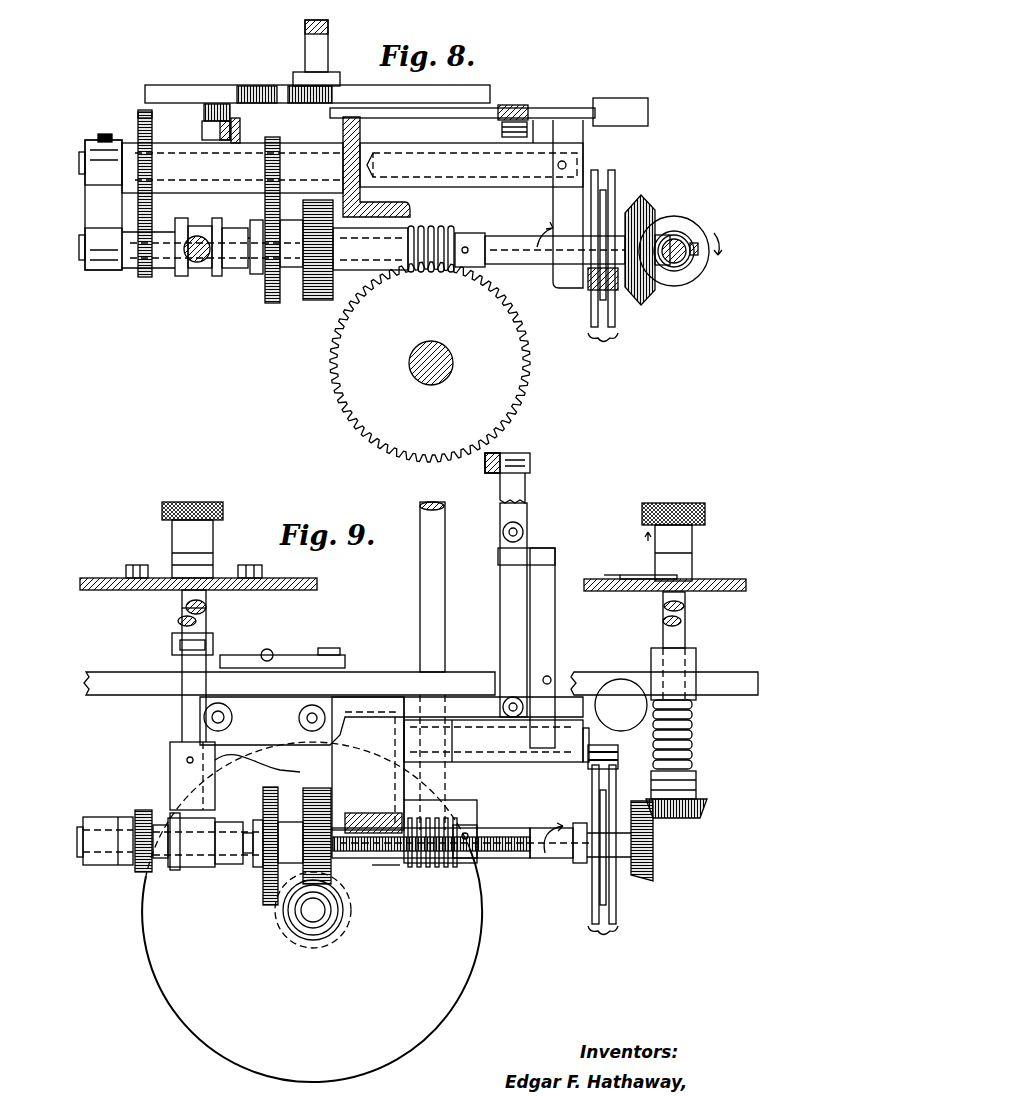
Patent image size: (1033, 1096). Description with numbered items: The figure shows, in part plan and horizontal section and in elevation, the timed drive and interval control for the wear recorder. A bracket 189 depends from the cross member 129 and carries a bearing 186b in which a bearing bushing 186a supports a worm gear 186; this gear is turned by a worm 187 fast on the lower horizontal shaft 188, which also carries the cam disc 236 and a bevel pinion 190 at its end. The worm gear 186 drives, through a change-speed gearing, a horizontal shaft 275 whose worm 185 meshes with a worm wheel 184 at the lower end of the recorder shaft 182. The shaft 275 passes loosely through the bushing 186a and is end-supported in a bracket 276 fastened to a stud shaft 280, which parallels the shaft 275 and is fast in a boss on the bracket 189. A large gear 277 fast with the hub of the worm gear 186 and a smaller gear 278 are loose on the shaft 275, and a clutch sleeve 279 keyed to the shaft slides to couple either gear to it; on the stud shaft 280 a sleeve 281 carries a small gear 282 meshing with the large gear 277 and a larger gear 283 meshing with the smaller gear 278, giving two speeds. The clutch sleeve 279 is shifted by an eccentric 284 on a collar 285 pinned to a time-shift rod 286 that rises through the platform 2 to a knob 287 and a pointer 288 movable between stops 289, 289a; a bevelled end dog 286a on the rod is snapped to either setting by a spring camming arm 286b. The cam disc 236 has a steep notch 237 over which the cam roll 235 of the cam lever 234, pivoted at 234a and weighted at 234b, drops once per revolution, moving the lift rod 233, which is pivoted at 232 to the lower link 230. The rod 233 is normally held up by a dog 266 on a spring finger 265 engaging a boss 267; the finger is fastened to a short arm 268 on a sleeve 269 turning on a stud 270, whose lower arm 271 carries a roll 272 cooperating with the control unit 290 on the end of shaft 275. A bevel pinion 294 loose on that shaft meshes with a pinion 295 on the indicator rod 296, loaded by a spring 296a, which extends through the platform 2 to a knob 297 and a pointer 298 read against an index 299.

In FIG. 9, the platform 2 is at (83, 583).
In FIG. 9, the cross member 129 is at (110, 677).
In FIG. 8, the recorder shaft 182 is at (454, 363).
In FIG. 9, the recorder shaft 182 is at (427, 572).
In FIG. 8, the worm wheel 184 is at (527, 397).
In FIG. 9, the worm wheel 184 is at (533, 853).
In FIG. 8, the worm 185 is at (431, 228).
In FIG. 9, the worm 185 is at (438, 865).
In FIG. 8, the worm gear 186 is at (318, 298).
In FIG. 9, the worm gear 186 is at (327, 790).
In FIG. 9, the bearing bushing 186a is at (363, 812).
In FIG. 8, the bearing 186b is at (355, 272).
In FIG. 9, the bearing 186b is at (372, 865).
In FIG. 8, the worm 187 is at (297, 262).
In FIG. 9, the worm 187 is at (325, 920).
In FIG. 8, the lower horizontal shaft 188 is at (325, 47).
In FIG. 9, the lower horizontal shaft 188 is at (305, 915).
In FIG. 8, the bracket 189 is at (362, 133).
In FIG. 9, the bracket 189 is at (345, 747).
In FIG. 9, the bevel pinion 190 is at (307, 932).
In FIG. 9, the lower link 230 is at (490, 471).
In FIG. 9, the pivot 232 is at (530, 463).
In FIG. 9, the lift rod 233 is at (528, 483).
In FIG. 8, the cam lever 234 is at (550, 110).
In FIG. 9, the cam lever 234 is at (275, 706).
In FIG. 8, the fixed pivot 234a is at (203, 115).
In FIG. 9, the fixed pivot 234a is at (204, 717).
In FIG. 8, the weight 234b is at (625, 100).
In FIG. 9, the weight 234b is at (614, 703).
In FIG. 8, the cam roll 235 is at (307, 90).
In FIG. 9, the cam roll 235 is at (299, 718).
In FIG. 8, the cam disc 236 is at (170, 90).
In FIG. 9, the cam disc 236 is at (205, 1028).
In FIG. 8, the notch 237 is at (262, 90).
In FIG. 9, the notch 237 is at (280, 767).
In FIG. 9, the finger 265 is at (552, 610).
In FIG. 9, the dog 266 is at (525, 553).
In FIG. 9, the boss 267 is at (521, 529).
In FIG. 9, the short arm 268 is at (548, 680).
In FIG. 9, the sleeve 269 is at (507, 762).
In FIG. 9, the stud 270 is at (478, 745).
In FIG. 9, the lower arm 271 is at (577, 763).
In FIG. 8, the roll 272 is at (597, 283).
In FIG. 9, the roll 272 is at (590, 768).
In FIG. 8, the horizontal shaft 275 is at (517, 243).
In FIG. 9, the horizontal shaft 275 is at (565, 863).
In FIG. 8, the bracket 276 is at (92, 207).
In FIG. 9, the bracket 276 is at (92, 862).
In FIG. 8, the large gear 277 is at (268, 297).
In FIG. 9, the large gear 277 is at (273, 895).
In FIG. 8, the smaller gear 278 is at (147, 277).
In FIG. 9, the smaller gear 278 is at (143, 875).
In FIG. 8, the clutch sleeve 279 is at (203, 270).
In FIG. 9, the clutch sleeve 279 is at (195, 866).
In FIG. 8, the stud shaft 280 is at (83, 167).
In FIG. 8, the sleeve 281 is at (198, 185).
In FIG. 8, the small gear 282 is at (238, 138).
In FIG. 8, the larger gear 283 is at (138, 116).
In FIG. 9, the eccentric 284 is at (197, 817).
In FIG. 9, the collar 285 is at (172, 760).
In FIG. 8, the time-shift rod 286 is at (193, 267).
In FIG. 9, the time-shift rod 286 is at (177, 634).
In FIG. 9, the bevelled end dog 286a is at (212, 643).
In FIG. 9, the camming arm 286b is at (285, 657).
In FIG. 9, the knob 287 is at (180, 498).
In FIG. 9, the pointer 288 is at (183, 568).
In FIG. 9, the stop 289 is at (126, 572).
In FIG. 9, the stop 289a is at (262, 572).
In FIG. 8, the control unit 290 is at (603, 263).
In FIG. 9, the control unit 290 is at (604, 860).
In FIG. 8, the bevel pinion 294 is at (642, 280).
In FIG. 9, the bevel pinion 294 is at (653, 863).
In FIG. 8, the bevelled pinion 295 is at (697, 226).
In FIG. 9, the bevelled pinion 295 is at (692, 815).
In FIG. 8, the indicator rod 296 is at (675, 235).
In FIG. 9, the indicator rod 296 is at (686, 634).
In FIG. 8, the spring 296a is at (692, 263).
In FIG. 9, the spring 296a is at (693, 733).
In FIG. 9, the knob 297 is at (700, 512).
In FIG. 9, the pointer 298 is at (628, 575).
In FIG. 9, the index 299 is at (607, 572).